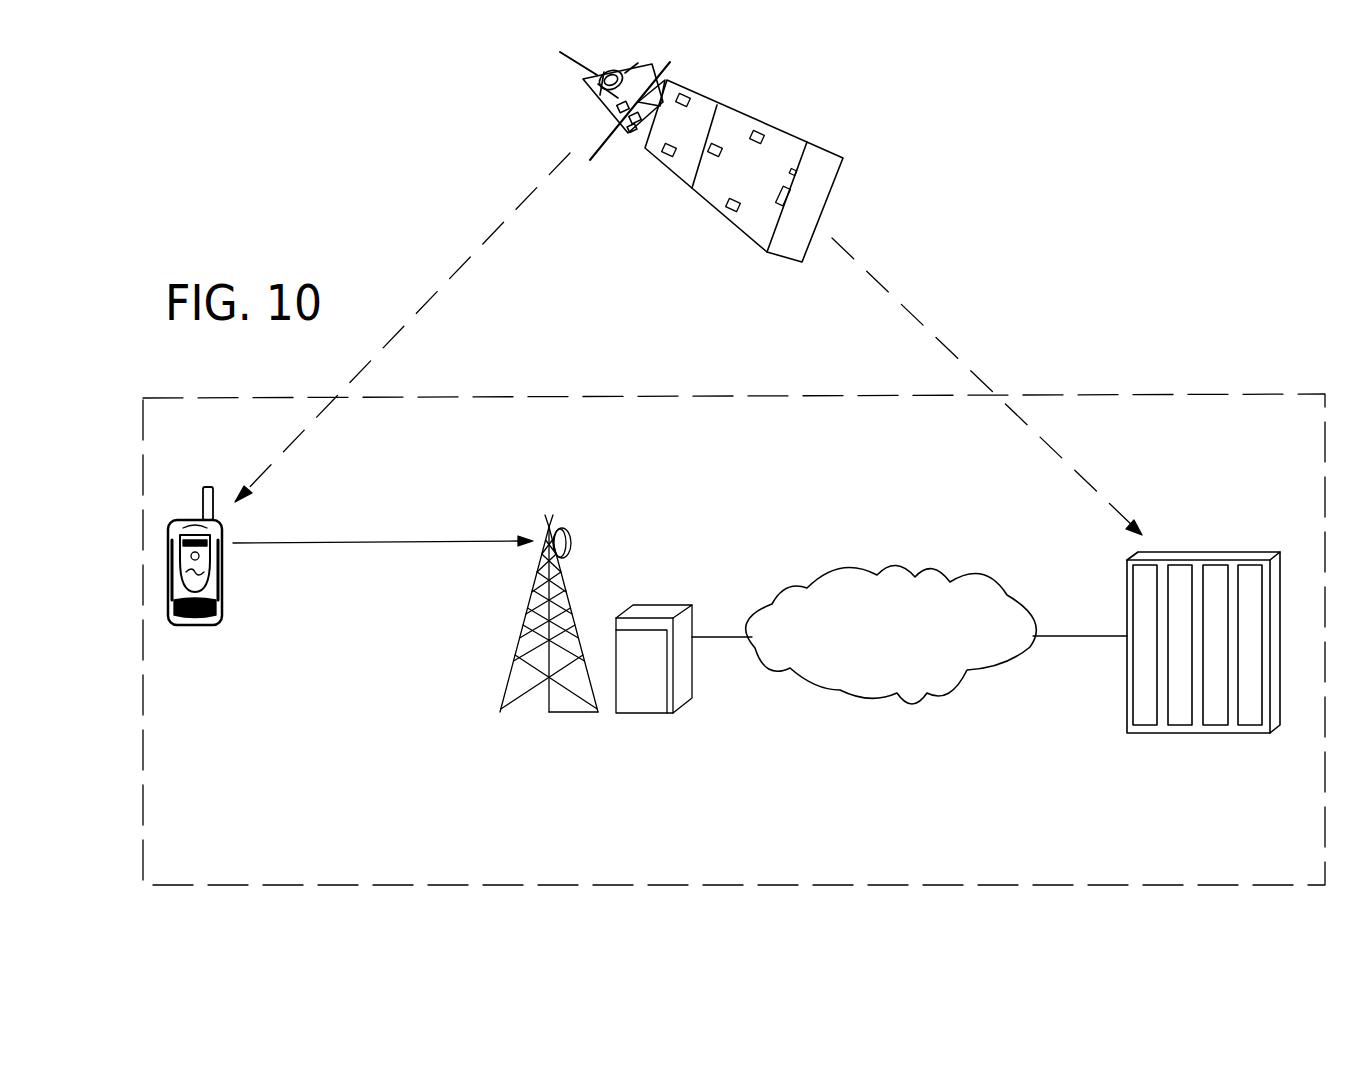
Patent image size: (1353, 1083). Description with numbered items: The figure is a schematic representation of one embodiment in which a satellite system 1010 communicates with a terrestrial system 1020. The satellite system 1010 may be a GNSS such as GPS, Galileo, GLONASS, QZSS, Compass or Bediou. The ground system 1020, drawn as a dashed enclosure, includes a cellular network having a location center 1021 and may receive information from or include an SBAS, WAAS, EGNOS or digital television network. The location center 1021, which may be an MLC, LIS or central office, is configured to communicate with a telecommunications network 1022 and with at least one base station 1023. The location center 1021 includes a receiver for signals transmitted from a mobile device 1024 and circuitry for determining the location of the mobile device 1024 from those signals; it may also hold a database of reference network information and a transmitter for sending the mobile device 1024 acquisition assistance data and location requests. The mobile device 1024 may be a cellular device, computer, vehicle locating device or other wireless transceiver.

The satellite system 1010 is at (868, 205).
The terrestrial system 1020 is at (1152, 392).
The location center 1021 is at (1186, 535).
The telecommunications network 1022 is at (857, 570).
The base station 1023 is at (567, 520).
The mobile device 1024 is at (186, 514).